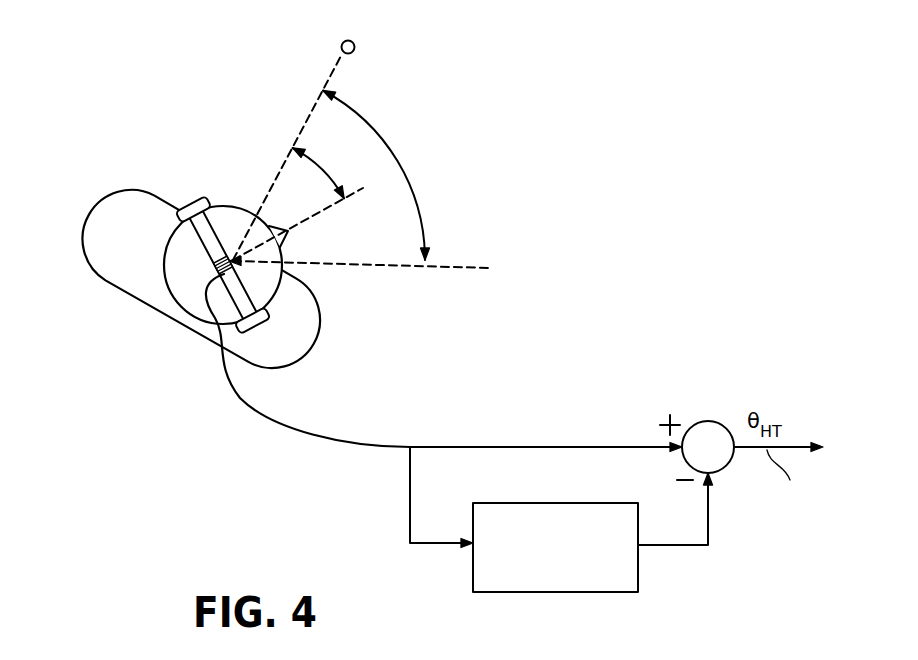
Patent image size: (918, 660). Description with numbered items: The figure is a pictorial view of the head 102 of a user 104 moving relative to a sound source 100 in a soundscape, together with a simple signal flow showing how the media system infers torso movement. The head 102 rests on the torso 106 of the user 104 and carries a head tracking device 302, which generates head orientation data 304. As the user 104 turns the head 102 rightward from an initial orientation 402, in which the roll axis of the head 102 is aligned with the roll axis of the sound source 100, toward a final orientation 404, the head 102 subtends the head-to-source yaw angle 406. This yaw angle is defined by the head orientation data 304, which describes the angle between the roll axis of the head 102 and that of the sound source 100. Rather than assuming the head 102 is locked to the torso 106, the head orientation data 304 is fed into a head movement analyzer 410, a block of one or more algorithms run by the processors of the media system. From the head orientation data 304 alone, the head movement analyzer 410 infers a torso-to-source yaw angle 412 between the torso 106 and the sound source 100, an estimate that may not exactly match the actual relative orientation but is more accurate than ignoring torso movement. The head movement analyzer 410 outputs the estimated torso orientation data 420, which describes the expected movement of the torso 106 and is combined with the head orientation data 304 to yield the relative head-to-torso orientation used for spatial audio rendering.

The sound source 100 is at (357, 48).
The head 102 is at (167, 270).
The user 104 is at (103, 197).
The torso 106 is at (90, 245).
The head tracking device 302 is at (197, 200).
The head orientation data 304 is at (245, 400).
The initial orientation 402 is at (328, 80).
The final orientation 404 is at (468, 268).
The head-to-source yaw angle 406 is at (382, 140).
The head movement analyzer 410 is at (473, 575).
The torso-to-source yaw angle 412 is at (320, 170).
The torso orientation data 420 is at (710, 527).